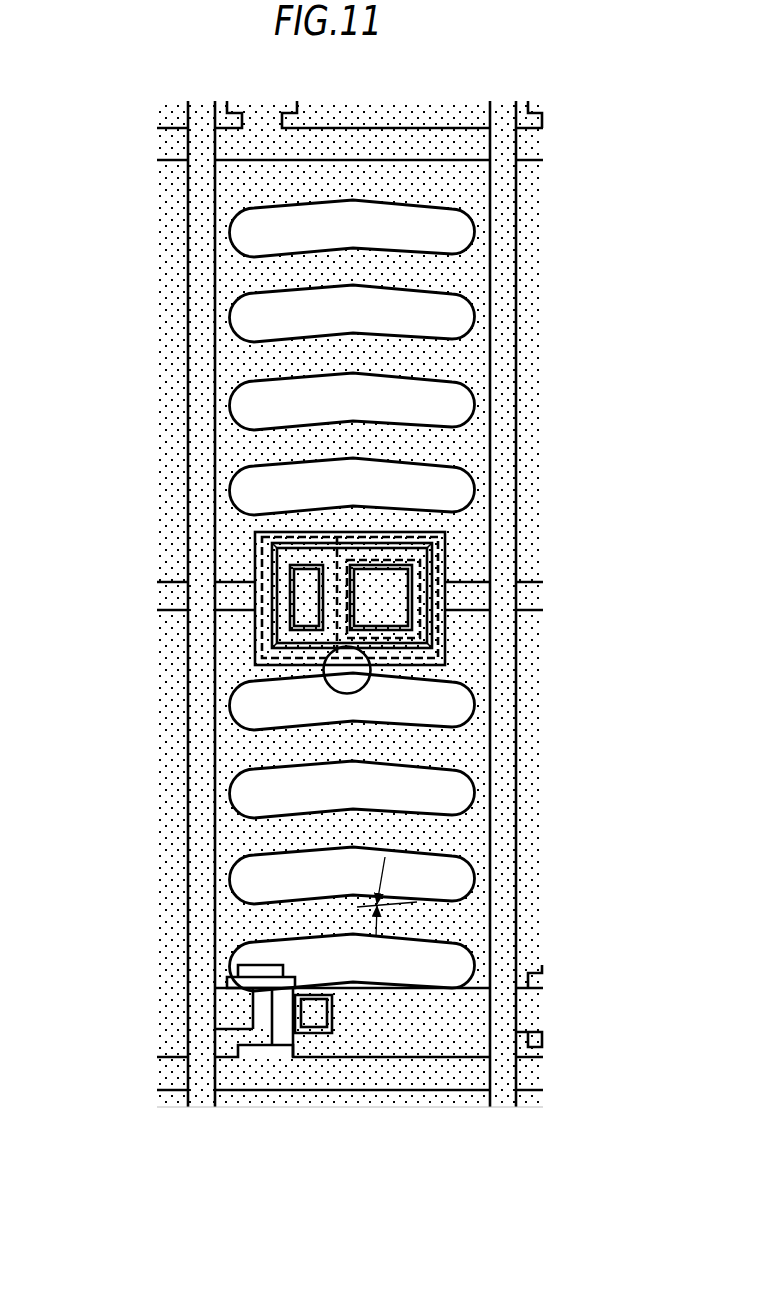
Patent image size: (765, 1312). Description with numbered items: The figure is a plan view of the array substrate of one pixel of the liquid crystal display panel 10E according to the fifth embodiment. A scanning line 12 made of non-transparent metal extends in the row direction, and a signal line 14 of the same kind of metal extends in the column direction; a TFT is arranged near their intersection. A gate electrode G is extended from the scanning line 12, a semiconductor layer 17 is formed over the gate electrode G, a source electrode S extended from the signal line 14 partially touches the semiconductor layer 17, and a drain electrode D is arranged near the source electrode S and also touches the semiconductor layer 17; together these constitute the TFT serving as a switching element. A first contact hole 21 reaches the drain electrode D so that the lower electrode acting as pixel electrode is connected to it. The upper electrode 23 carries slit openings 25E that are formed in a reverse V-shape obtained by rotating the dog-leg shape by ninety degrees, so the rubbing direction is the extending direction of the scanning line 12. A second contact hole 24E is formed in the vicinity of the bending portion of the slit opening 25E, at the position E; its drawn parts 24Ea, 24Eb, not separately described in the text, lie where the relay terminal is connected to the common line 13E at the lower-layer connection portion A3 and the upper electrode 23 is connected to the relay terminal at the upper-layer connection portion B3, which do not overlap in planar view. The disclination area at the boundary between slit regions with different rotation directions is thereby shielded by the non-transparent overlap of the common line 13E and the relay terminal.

The liquid crystal display panel 10E is at (138, 108).
The scanning line 12 is at (438, 1075).
The common line 13E is at (186, 597).
The signal line 14 is at (202, 887).
The semiconductor layer 17 is at (258, 1027).
The first contact hole 21 is at (340, 1085).
The upper electrode 23 is at (281, 595).
The second contact hole 24E is at (350, 454).
The first portion of pixel electrode 24Ea is at (292, 555).
The second portion of pixel electrode 24Eb is at (385, 592).
The slit openings 25E is at (263, 800).
The connection portion A3 is at (293, 535).
The connection portion B3 is at (388, 556).
The position E is at (367, 690).
The source electrode S is at (240, 1020).
The gate electrode G is at (270, 1050).
The drain electrode D is at (287, 1020).
The thin film transistor TFT is at (350, 1111).